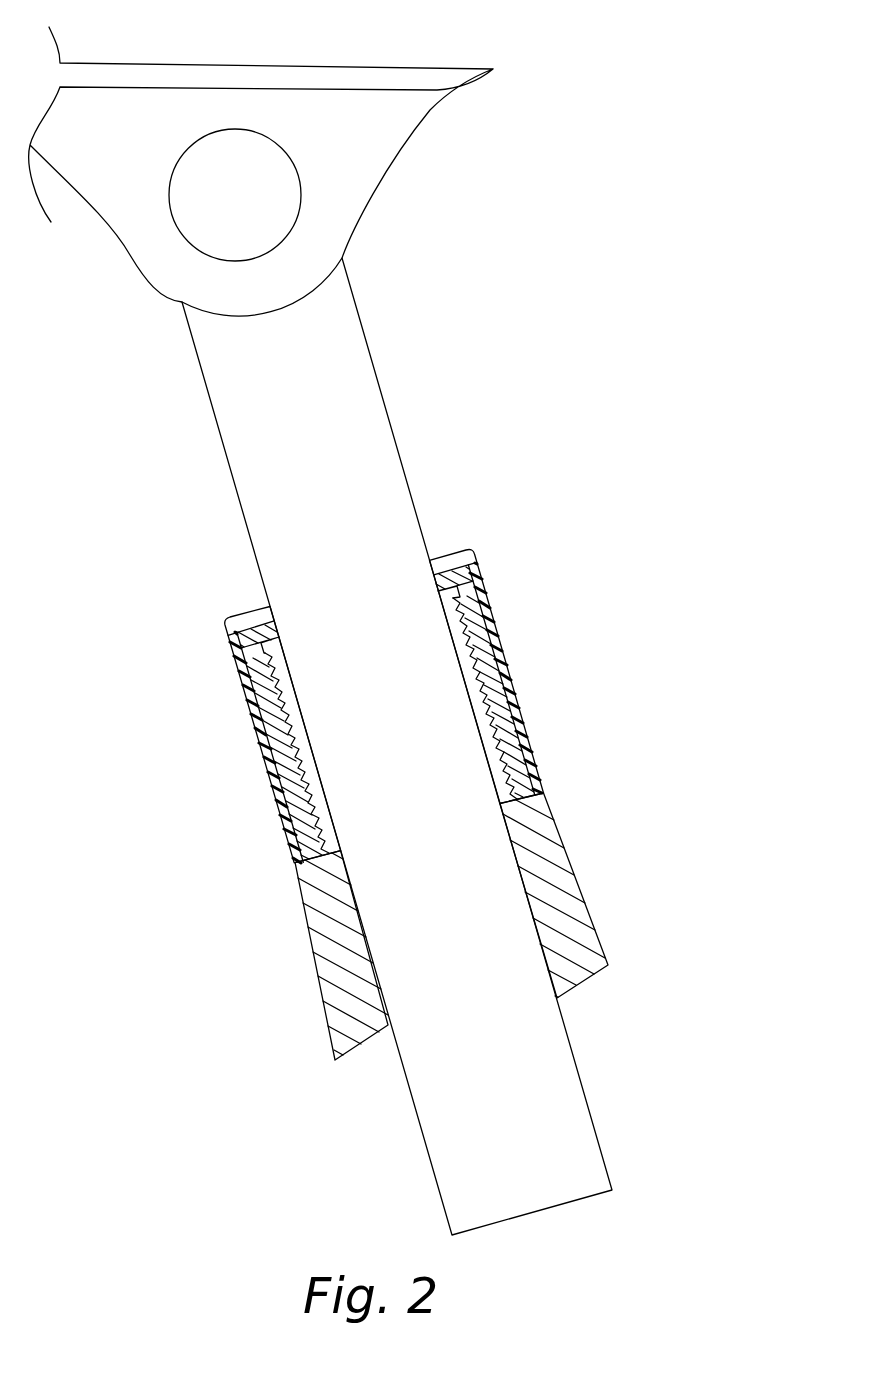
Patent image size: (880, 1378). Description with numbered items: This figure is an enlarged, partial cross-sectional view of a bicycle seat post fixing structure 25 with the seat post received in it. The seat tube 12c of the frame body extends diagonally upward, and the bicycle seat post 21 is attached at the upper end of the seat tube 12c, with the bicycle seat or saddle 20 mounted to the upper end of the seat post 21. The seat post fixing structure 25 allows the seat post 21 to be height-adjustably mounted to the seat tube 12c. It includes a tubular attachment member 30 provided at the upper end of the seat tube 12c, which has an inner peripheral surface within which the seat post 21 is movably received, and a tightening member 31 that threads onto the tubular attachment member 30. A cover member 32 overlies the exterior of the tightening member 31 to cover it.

The bicycle seat or saddle 20 is at (368, 135).
The bicycle seat post 21 is at (363, 410).
The seat post fixing structure 25 is at (464, 657).
The tubular attachment member 30 is at (502, 770).
The tightening member 31 is at (470, 588).
The cover member 32 is at (498, 607).
The seat tube 12c is at (563, 878).